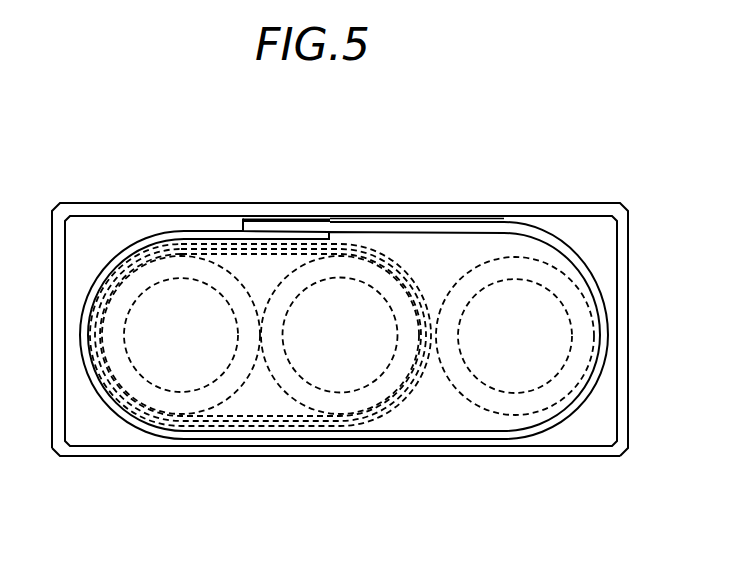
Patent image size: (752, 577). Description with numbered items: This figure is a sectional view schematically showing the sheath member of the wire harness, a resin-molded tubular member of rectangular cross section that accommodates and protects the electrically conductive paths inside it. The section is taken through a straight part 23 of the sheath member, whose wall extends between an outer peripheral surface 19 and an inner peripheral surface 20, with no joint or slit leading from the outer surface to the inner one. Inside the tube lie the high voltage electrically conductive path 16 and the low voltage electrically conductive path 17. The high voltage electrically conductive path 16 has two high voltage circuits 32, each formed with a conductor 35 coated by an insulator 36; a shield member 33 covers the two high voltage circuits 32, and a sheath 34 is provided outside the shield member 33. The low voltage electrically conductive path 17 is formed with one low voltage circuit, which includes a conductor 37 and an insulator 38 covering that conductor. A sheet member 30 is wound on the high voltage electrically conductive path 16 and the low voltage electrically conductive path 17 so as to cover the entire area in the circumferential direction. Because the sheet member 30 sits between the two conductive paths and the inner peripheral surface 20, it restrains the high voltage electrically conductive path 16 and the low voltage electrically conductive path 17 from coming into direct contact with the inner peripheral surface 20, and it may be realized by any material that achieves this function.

The high voltage electrically conductive path 16 is at (264, 283).
The low voltage electrically conductive path 17 is at (554, 282).
The outer peripheral surface 19 is at (163, 457).
The inner peripheral surface 20 is at (583, 445).
The straight part 23 is at (602, 205).
The sheet member 30 is at (437, 432).
The high voltage circuit 32 is at (353, 147).
The shield member 33 is at (212, 249).
The sheath 34 is at (145, 243).
The conductor 35 is at (283, 254).
The insulator 36 is at (334, 268).
The conductor 37 is at (553, 352).
The insulator 38 is at (572, 302).